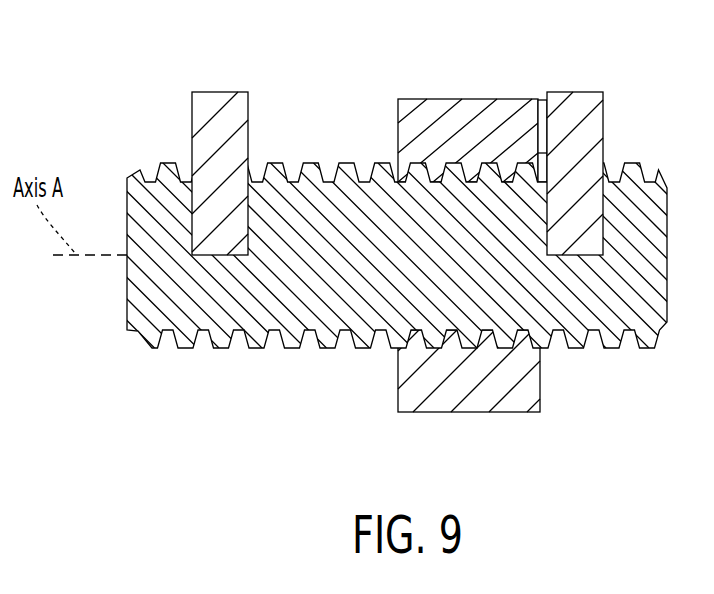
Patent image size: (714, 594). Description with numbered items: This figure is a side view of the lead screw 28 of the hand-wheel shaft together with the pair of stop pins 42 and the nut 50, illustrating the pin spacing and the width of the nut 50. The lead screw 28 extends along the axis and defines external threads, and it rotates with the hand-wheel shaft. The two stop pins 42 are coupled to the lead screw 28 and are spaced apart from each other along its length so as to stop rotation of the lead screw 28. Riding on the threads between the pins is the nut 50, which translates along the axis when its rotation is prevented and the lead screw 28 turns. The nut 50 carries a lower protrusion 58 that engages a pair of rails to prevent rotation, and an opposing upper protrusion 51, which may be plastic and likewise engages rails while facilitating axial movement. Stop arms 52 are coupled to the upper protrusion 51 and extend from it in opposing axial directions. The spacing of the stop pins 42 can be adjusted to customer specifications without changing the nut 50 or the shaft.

The lead screw 28 is at (308, 150).
The stop pins 42 is at (213, 102).
The nut 50 is at (472, 92).
The upper protrusion 51 is at (472, 105).
The stop arms 52 is at (538, 96).
The lower protrusion 58 is at (480, 402).